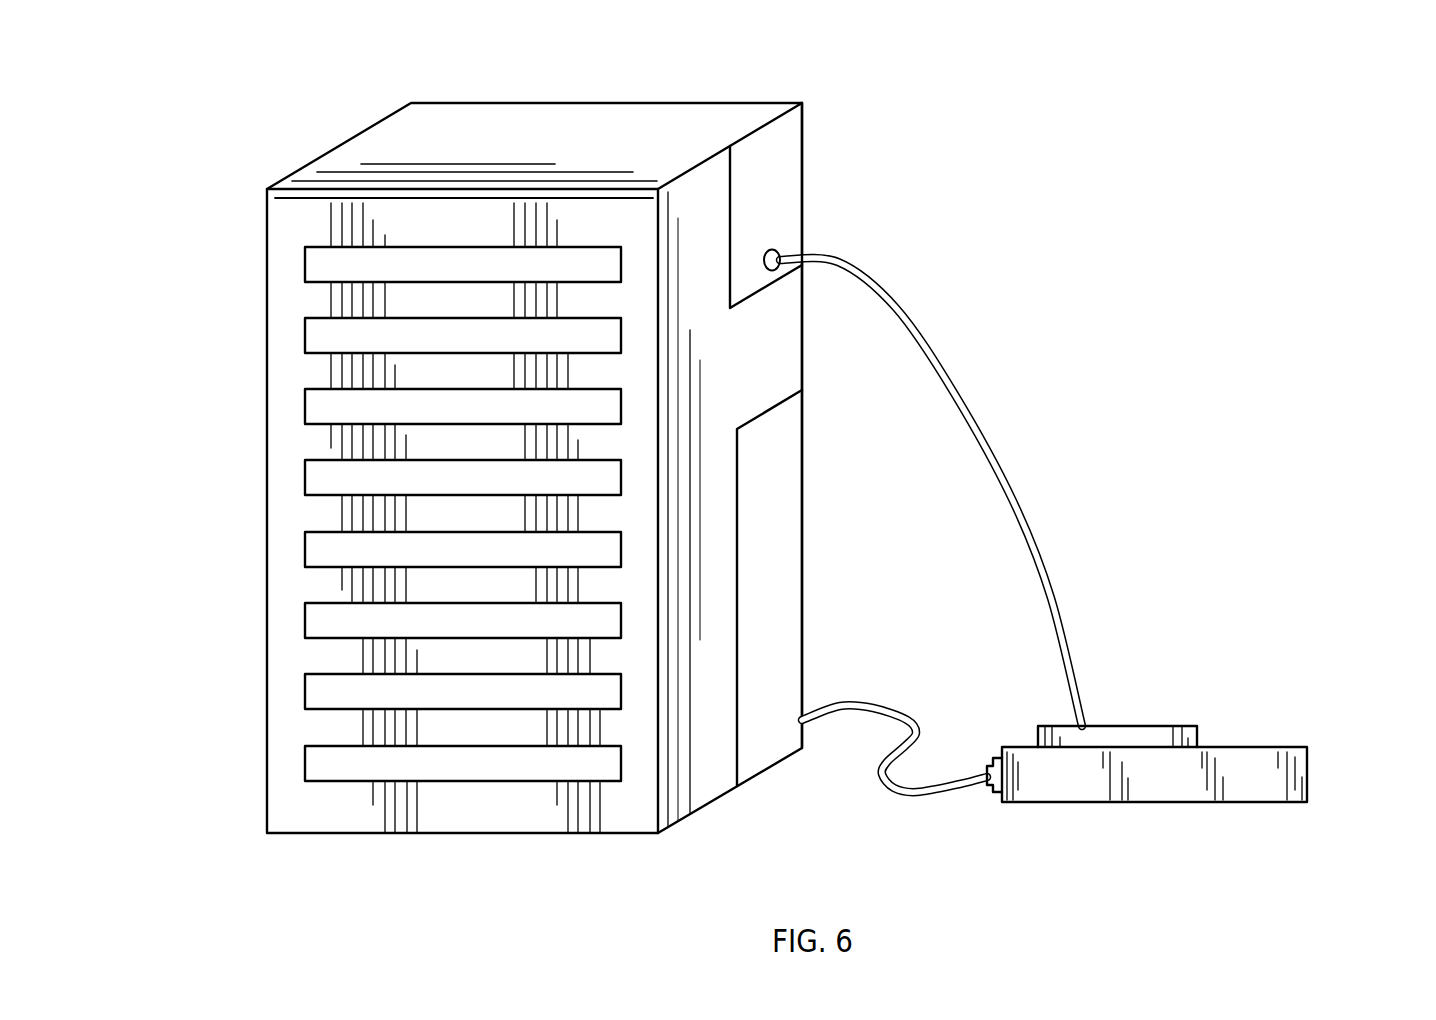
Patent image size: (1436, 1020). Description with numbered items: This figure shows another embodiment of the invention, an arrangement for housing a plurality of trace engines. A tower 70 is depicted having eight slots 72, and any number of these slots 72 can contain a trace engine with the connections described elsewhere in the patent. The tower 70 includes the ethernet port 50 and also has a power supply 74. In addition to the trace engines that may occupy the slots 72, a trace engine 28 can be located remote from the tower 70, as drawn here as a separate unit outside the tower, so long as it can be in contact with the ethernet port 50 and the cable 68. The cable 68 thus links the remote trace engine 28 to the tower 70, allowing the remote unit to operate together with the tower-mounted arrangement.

The tower 70 is at (1196, 72).
The ethernet port 50 is at (770, 162).
The slots 72 is at (305, 260).
The power supply 74 is at (782, 488).
The cable 68 is at (878, 702).
The trace engine 28 is at (1307, 758).